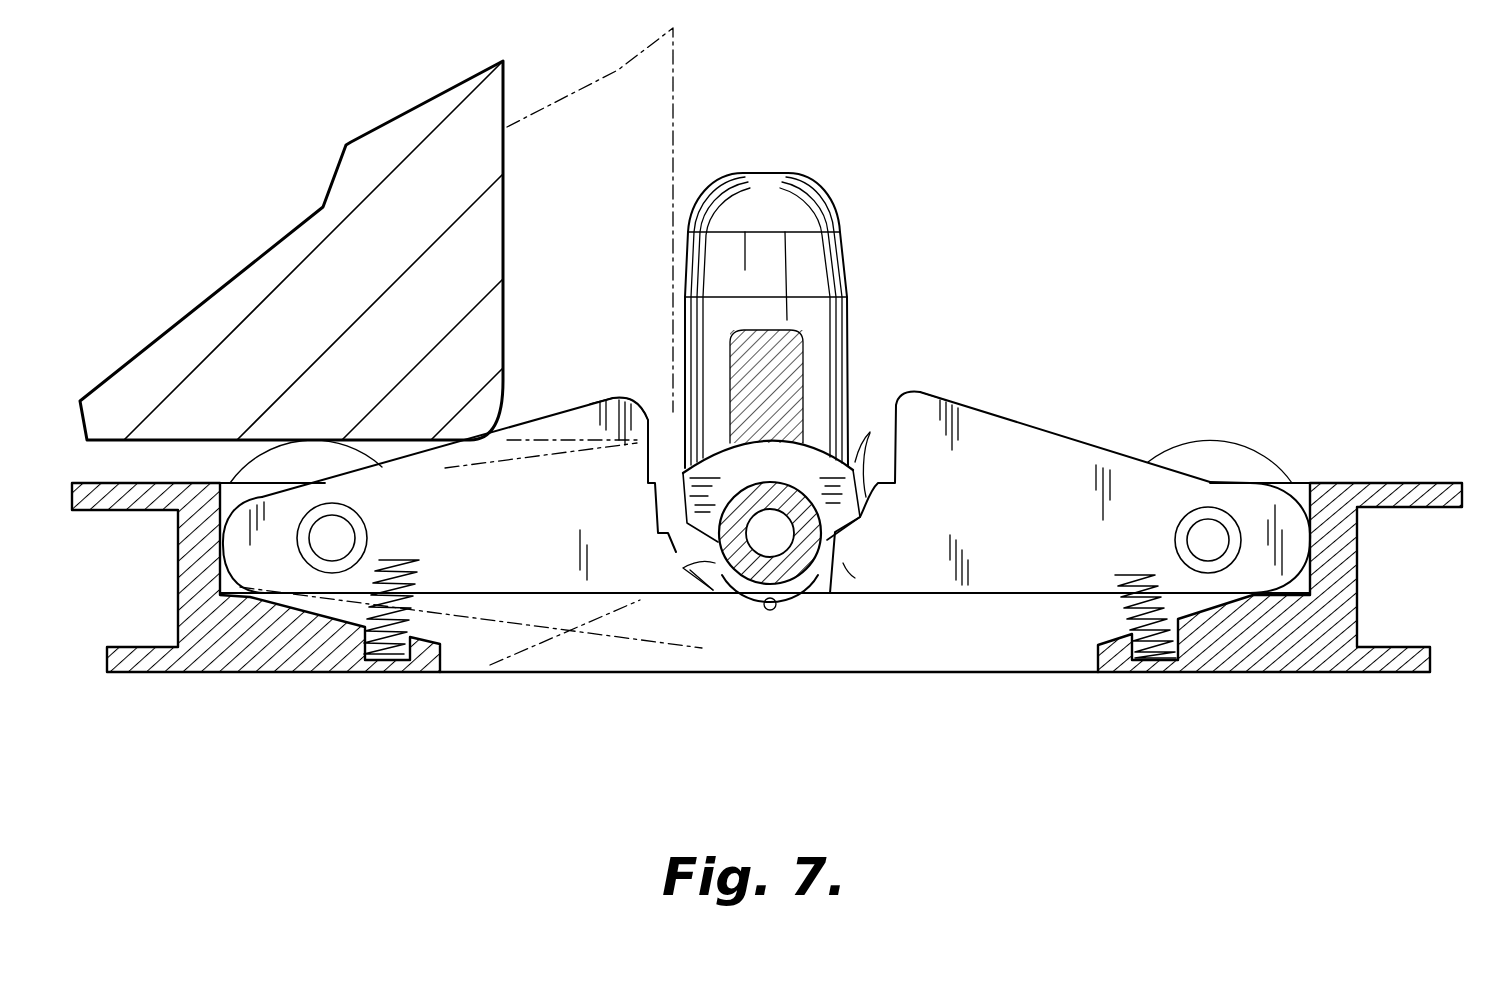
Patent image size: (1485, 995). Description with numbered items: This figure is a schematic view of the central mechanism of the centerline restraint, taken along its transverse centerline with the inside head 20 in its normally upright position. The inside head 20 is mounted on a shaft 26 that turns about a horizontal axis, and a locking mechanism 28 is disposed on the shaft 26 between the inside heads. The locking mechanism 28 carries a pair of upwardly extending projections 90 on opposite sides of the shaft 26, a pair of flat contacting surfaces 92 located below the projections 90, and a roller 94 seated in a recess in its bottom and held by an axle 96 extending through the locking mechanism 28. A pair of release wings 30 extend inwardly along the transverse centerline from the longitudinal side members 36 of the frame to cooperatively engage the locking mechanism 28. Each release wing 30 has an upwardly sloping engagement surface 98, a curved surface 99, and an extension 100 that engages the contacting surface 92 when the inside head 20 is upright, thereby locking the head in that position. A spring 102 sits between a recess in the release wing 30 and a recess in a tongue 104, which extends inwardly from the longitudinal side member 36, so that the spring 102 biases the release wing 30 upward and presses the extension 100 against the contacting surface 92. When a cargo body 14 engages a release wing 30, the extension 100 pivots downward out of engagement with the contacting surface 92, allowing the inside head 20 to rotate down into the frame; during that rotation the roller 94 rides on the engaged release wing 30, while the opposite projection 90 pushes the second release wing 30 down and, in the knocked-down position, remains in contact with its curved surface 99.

The cargo body 14 is at (390, 249).
The inside head 20 is at (840, 212).
The shaft 26 is at (822, 600).
The locking mechanism 28 is at (788, 478).
The release wing 30 is at (556, 538).
The longitudinal side member 36 is at (187, 562).
The projection 90 is at (650, 438).
The contacting surface 92 is at (690, 570).
The roller 94 is at (788, 637).
The axle 96 is at (767, 613).
The engagement surface 98 is at (597, 398).
The curved surface 99 is at (866, 497).
The extension 100 is at (843, 563).
The spring 102 is at (312, 675).
The tongue 104 is at (417, 673).